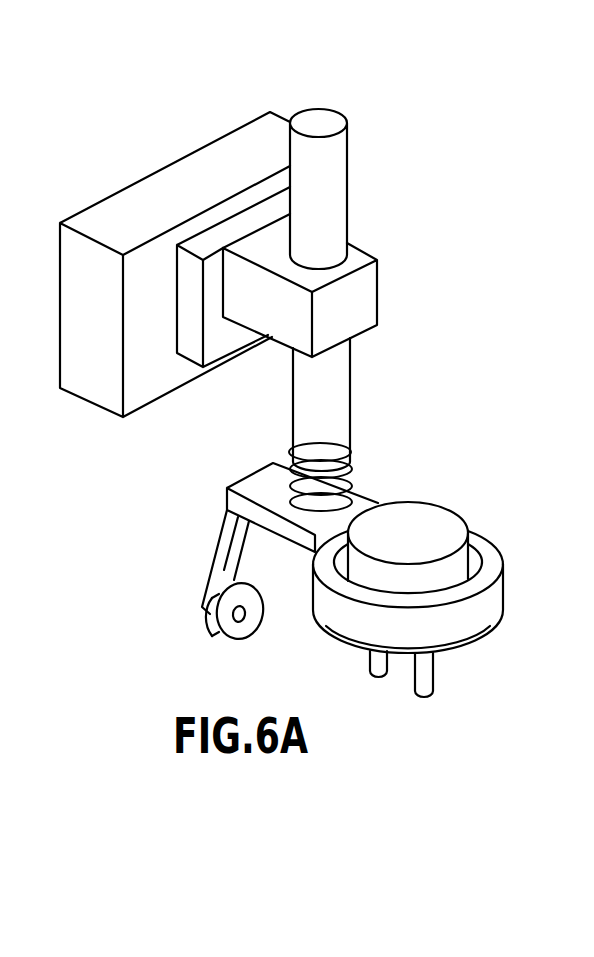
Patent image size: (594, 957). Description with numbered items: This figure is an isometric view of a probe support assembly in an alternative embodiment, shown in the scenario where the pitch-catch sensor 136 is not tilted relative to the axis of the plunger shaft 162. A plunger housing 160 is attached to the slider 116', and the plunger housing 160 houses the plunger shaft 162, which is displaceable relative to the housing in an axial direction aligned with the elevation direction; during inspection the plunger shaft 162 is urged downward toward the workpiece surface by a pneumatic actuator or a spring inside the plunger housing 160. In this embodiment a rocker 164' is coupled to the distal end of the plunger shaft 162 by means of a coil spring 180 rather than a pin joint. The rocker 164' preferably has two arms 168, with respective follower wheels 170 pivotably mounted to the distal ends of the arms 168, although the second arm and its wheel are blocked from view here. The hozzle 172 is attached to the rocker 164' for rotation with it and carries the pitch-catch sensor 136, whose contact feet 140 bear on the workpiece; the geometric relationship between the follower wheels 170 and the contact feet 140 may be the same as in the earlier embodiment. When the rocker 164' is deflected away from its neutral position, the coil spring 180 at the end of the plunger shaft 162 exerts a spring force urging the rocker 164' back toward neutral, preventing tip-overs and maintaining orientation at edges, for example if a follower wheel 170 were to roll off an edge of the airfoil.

The slider 116' is at (175, 262).
The plunger housing 160 is at (378, 290).
The plunger shaft 162 is at (350, 383).
The coil spring 180 is at (358, 475).
The rocker 164' is at (264, 507).
The arms 168 is at (214, 556).
The follower wheels 170 is at (208, 625).
The hozzle 172 is at (500, 573).
The pitch-catch sensor 136 is at (420, 523).
The contact feet 140 is at (433, 672).